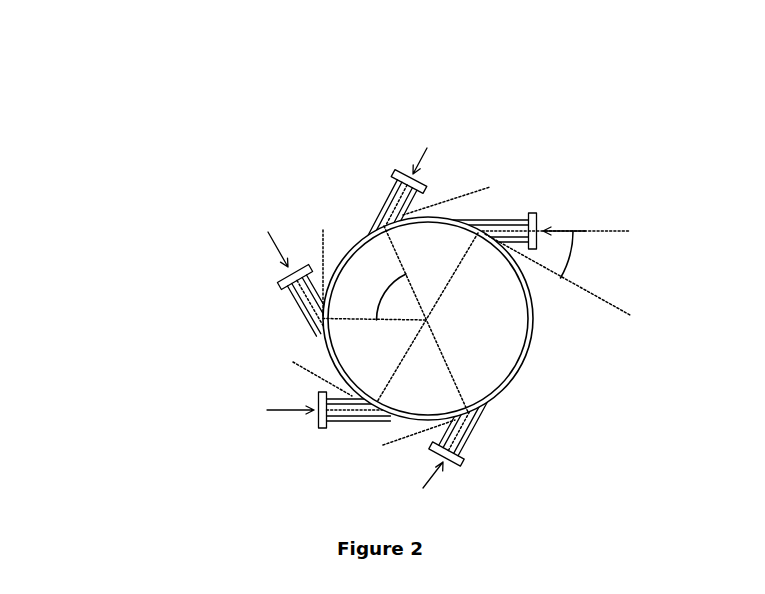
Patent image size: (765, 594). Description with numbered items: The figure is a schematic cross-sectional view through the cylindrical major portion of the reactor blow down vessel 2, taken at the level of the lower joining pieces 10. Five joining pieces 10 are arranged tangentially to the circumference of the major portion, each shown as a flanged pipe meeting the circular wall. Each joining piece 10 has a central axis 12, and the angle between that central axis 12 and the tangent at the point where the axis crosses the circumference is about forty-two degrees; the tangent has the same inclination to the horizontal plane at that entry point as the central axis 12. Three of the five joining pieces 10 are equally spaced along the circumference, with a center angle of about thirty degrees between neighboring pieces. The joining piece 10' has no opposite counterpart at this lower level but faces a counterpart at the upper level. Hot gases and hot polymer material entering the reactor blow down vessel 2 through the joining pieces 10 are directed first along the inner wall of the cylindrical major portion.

The reactor blow down vessel 2 is at (353, 240).
The lower joining piece 10 is at (541, 137).
The joining piece without lower-level counterpart 10' is at (201, 284).
The central axis of lower joining piece 12 is at (500, 228).